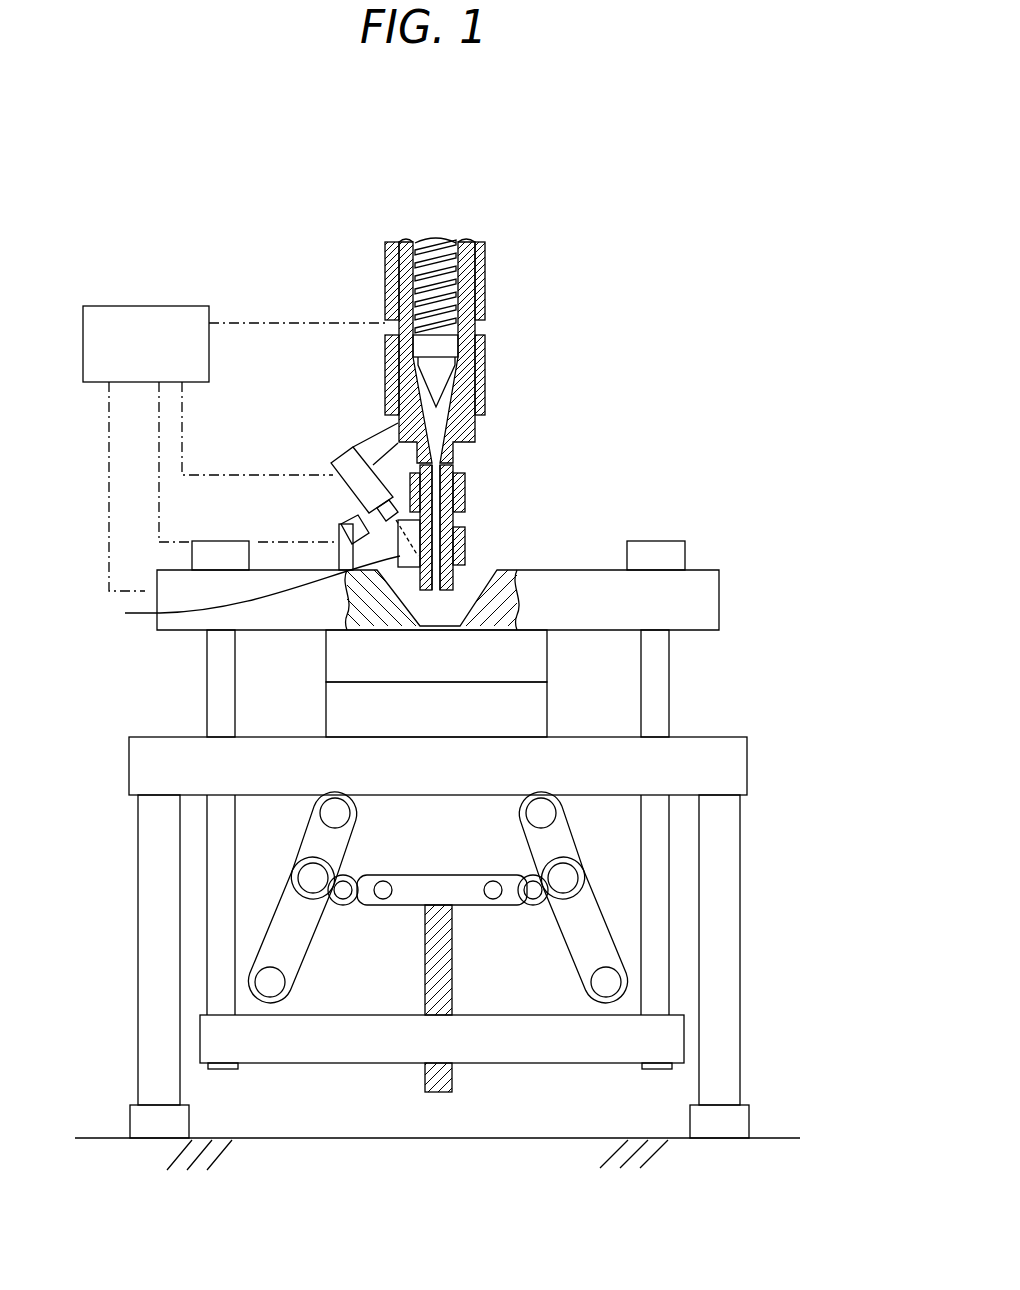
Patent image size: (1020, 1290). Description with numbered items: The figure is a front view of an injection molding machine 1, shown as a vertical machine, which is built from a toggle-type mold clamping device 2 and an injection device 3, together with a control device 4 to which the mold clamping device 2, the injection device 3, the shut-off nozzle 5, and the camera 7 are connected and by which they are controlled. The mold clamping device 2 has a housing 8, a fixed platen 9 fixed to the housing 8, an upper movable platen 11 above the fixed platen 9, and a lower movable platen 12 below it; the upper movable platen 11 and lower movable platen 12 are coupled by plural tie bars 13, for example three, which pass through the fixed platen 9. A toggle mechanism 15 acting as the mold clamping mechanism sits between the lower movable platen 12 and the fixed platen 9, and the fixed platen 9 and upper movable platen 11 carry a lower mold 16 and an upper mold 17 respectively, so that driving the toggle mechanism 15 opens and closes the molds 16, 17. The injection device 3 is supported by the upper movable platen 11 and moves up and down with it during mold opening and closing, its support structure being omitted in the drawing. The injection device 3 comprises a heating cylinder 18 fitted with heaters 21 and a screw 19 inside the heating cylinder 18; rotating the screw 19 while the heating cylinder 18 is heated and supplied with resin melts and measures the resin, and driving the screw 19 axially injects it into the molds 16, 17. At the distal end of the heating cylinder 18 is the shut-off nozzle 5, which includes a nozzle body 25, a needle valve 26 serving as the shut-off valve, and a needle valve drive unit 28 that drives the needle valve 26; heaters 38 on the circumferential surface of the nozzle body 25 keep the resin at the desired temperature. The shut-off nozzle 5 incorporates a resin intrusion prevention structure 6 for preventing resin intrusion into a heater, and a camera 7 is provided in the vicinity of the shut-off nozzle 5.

The injection molding machine 1 is at (683, 188).
The mold clamping device 2 is at (437, 812).
The injection device 3 is at (505, 231).
The control device 4 is at (112, 306).
The shut-off nozzle 5 is at (281, 428).
The resin intrusion prevention structure 6 is at (252, 590).
The camera 7 is at (340, 530).
The housing 8 is at (741, 835).
The fixed platen 9 is at (748, 752).
The upper movable platen 11 is at (590, 568).
The lower movable platen 12 is at (583, 1064).
The tie bars 13 is at (207, 675).
The toggle mechanism 15 is at (360, 992).
The lower mold 16 is at (548, 710).
The upper mold 17 is at (548, 658).
The heating cylinder 18 is at (485, 254).
The screw 19 is at (465, 327).
The heaters 21 is at (385, 272).
The nozzle body 25 is at (457, 460).
The needle valve 26 is at (457, 525).
The needle valve drive unit 28 is at (340, 457).
The heaters 38 is at (465, 488).